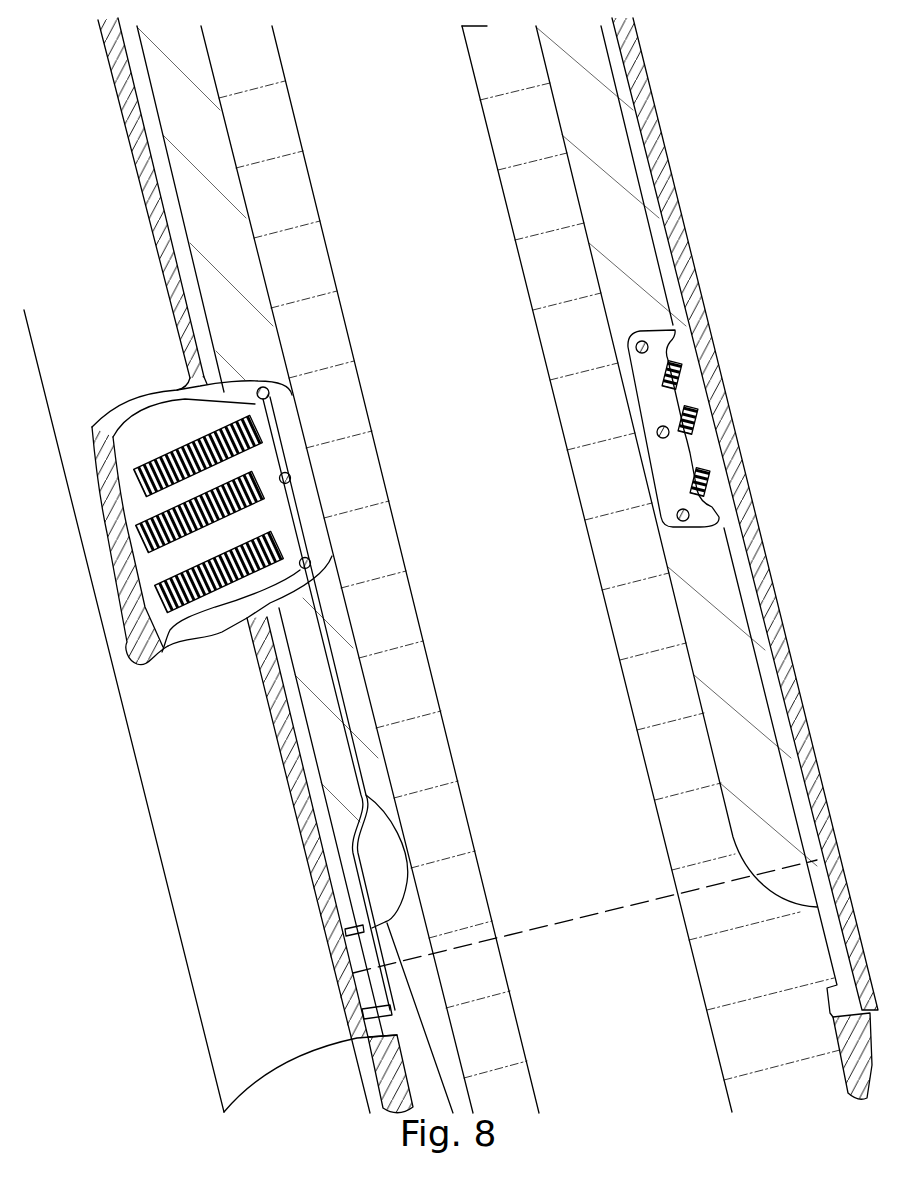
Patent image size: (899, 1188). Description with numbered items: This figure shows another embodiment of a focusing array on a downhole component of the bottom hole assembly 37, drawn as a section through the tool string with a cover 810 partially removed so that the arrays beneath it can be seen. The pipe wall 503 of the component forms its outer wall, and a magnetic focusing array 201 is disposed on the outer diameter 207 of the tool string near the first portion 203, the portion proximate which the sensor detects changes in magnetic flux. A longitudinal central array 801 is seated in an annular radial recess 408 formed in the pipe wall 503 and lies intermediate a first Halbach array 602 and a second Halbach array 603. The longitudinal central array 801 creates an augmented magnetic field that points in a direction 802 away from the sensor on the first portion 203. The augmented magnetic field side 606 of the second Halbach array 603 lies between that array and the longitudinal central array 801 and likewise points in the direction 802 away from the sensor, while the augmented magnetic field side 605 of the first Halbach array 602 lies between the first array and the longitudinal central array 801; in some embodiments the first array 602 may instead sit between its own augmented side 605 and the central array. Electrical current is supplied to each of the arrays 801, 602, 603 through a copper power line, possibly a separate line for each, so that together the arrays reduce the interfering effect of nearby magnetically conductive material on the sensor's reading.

The bottom hole assembly 37 is at (783, 115).
The first portion 203 is at (638, 177).
The pipe wall 503 is at (557, 257).
The magnetic focusing array 201 is at (725, 420).
The augmented magnetic field side 606 is at (266, 449).
The augmented magnetic field side 605 is at (288, 517).
The second Halbach array 603 is at (102, 517).
The longitudinal central array 801 is at (114, 579).
The first Halbach array 602 is at (140, 639).
The annular radial recess 408 is at (220, 632).
The direction 802 is at (150, 872).
The cover 810 is at (233, 1030).
The outer diameter 207 is at (613, 918).